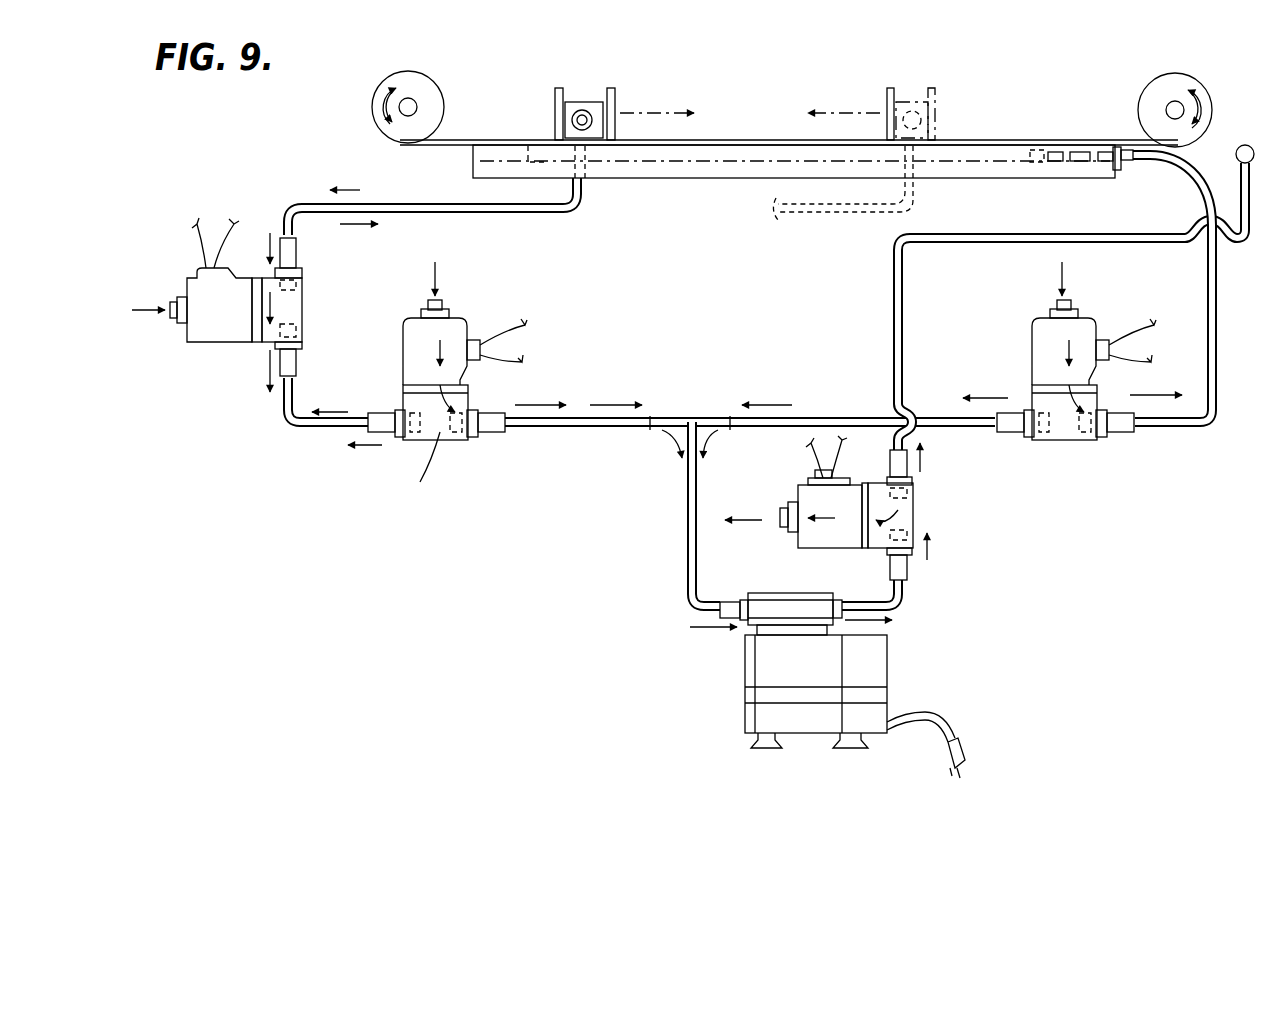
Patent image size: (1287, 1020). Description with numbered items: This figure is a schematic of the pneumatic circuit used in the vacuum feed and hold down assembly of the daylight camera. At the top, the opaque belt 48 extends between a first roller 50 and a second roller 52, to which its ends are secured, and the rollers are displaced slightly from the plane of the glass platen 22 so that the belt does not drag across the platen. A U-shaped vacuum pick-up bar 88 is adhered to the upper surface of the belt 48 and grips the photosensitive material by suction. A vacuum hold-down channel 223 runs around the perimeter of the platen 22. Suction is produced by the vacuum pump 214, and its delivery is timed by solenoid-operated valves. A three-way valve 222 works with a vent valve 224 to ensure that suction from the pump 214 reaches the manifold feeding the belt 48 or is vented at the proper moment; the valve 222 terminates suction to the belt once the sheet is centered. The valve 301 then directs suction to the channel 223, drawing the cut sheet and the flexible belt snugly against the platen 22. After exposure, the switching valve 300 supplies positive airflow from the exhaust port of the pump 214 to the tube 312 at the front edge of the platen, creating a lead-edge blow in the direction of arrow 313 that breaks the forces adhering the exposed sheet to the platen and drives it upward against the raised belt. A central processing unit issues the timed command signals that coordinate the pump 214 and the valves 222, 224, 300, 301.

The glass platen 22 is at (936, 152).
The belt 48 is at (472, 140).
The first roller 50 is at (430, 90).
The second roller 52 is at (1155, 93).
The vacuum pick-up bar 88 is at (585, 102).
The vacuum pump 214 is at (870, 660).
The three-way valve 222 is at (455, 333).
The vacuum hold-down channel 223 is at (1028, 180).
The vent valve 224 is at (224, 338).
The switching valve 300 is at (905, 516).
The valve 301 is at (1062, 428).
The tube 312 is at (1261, 168).
The arrow 313 is at (1196, 155).